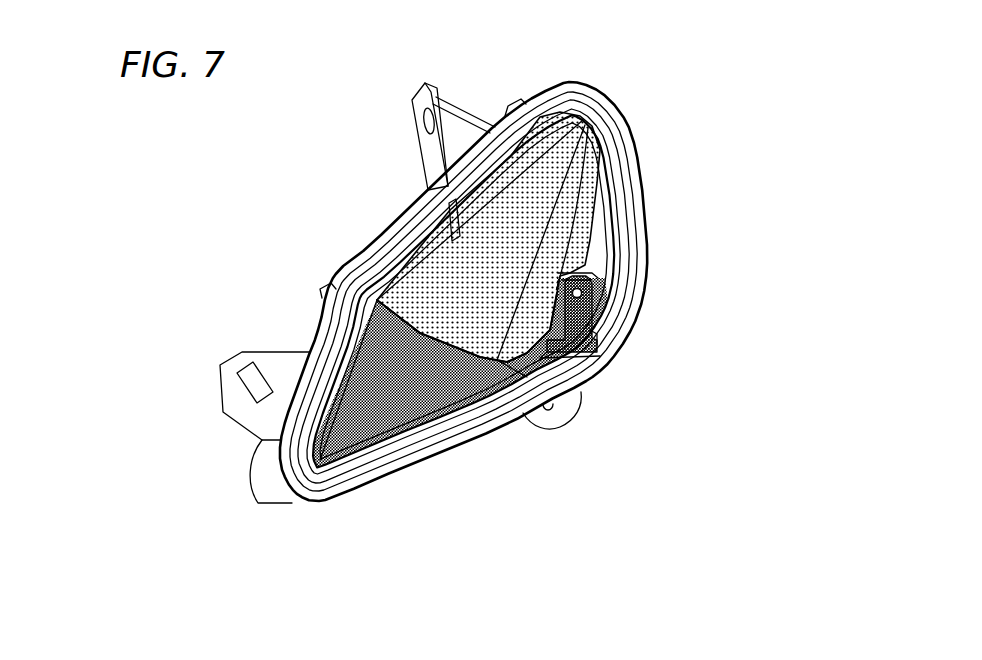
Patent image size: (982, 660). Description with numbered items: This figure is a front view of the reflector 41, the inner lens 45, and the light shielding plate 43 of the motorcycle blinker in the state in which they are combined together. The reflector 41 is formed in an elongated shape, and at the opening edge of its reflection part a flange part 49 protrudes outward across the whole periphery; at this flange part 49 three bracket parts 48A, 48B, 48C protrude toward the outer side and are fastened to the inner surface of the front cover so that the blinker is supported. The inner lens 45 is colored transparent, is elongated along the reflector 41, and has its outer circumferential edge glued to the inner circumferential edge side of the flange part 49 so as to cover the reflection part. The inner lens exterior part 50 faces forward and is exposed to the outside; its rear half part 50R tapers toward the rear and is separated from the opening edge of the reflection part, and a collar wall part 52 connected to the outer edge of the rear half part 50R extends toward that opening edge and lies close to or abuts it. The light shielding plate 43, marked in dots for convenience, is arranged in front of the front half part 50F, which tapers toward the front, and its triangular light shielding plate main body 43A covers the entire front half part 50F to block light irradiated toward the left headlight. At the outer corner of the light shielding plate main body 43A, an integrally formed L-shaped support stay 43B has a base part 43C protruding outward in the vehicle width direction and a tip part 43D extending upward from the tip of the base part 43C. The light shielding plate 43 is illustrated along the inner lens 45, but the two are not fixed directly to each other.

The reflector 41 is at (641, 128).
The light shielding plate 43 is at (457, 433).
The light shielding plate main body 43A is at (426, 418).
The support stay 43B is at (595, 336).
The base part 43C is at (580, 360).
The tip part 43D is at (580, 318).
The inner lens 45 is at (631, 203).
The bracket part 48A is at (400, 124).
The bracket part 48B is at (218, 393).
The bracket part 48C is at (573, 430).
The flange part 49 is at (500, 420).
The inner lens exterior part 50 is at (568, 115).
The front half part 50F is at (398, 440).
The rear half part 50R is at (533, 183).
The collar wall part 52 is at (607, 238).